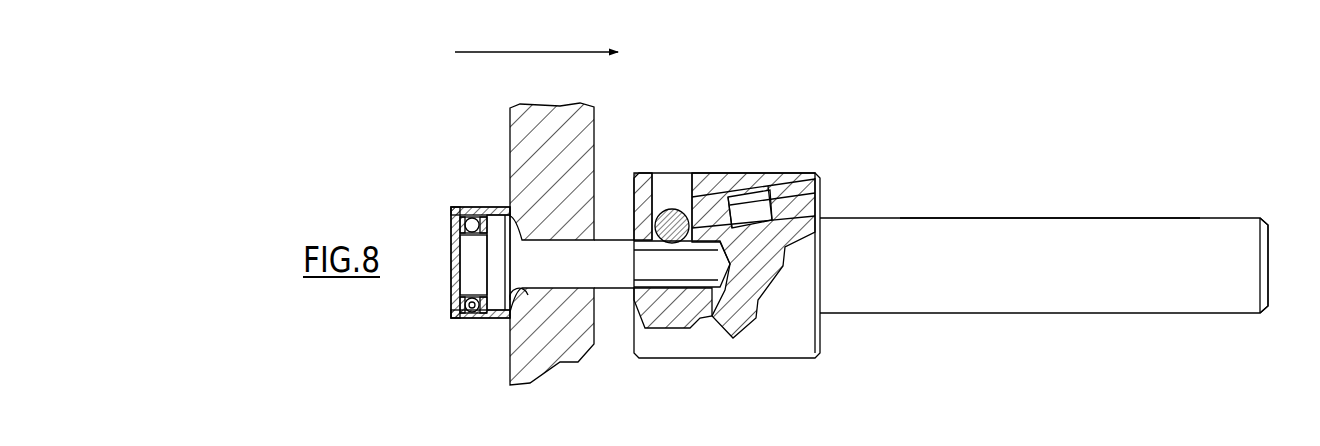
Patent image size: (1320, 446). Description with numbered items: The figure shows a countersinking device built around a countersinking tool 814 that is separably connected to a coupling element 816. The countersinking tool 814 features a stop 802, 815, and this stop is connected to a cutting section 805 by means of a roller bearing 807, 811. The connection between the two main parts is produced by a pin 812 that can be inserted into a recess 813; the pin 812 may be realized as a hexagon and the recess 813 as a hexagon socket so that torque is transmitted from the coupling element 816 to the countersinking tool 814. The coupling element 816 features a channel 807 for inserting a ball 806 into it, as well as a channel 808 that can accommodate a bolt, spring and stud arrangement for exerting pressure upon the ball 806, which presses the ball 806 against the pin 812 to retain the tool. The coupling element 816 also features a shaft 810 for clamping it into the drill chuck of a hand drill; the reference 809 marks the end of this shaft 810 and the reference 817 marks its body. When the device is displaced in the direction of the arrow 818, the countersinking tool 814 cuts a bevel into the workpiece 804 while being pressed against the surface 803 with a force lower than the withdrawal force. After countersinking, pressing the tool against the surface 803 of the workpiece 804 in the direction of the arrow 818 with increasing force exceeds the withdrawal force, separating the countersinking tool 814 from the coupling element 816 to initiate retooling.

The stop 802 is at (500, 207).
The surface 803 is at (508, 106).
The workpiece 804 is at (548, 128).
The cutting section 805 is at (512, 253).
The ball 806 is at (672, 209).
The roller bearing / channel 807 is at (475, 207).
The channel 808 is at (747, 197).
The rod end 809 is at (1268, 203).
The shaft 810 is at (963, 298).
The roller bearing 811 is at (472, 318).
The pin 812 is at (695, 272).
The recess 813 is at (653, 288).
The countersinking tool 814 is at (622, 288).
The stop 815 is at (500, 318).
The coupling element 816 is at (995, 178).
The rod surface 817 is at (1155, 258).
The arrow 818 is at (548, 52).